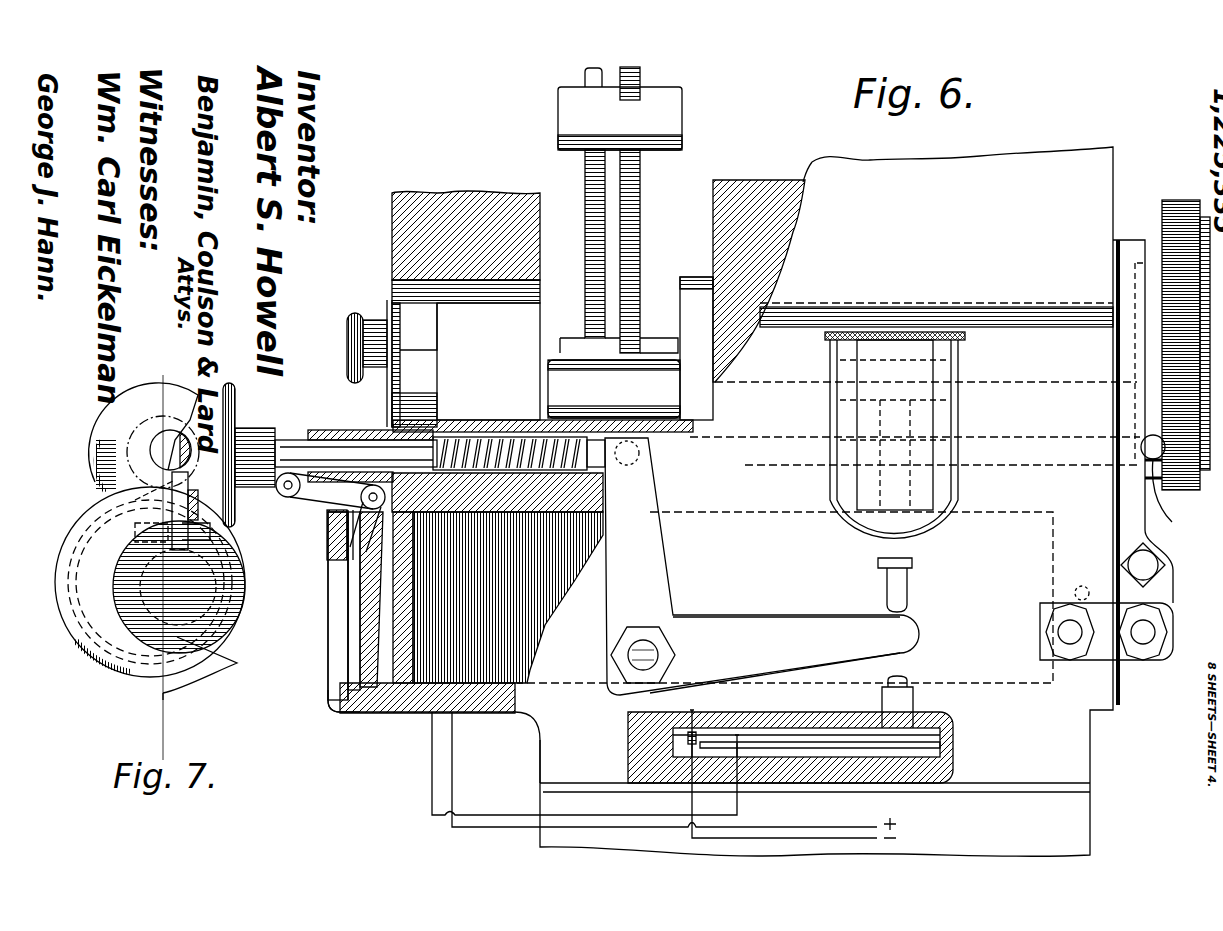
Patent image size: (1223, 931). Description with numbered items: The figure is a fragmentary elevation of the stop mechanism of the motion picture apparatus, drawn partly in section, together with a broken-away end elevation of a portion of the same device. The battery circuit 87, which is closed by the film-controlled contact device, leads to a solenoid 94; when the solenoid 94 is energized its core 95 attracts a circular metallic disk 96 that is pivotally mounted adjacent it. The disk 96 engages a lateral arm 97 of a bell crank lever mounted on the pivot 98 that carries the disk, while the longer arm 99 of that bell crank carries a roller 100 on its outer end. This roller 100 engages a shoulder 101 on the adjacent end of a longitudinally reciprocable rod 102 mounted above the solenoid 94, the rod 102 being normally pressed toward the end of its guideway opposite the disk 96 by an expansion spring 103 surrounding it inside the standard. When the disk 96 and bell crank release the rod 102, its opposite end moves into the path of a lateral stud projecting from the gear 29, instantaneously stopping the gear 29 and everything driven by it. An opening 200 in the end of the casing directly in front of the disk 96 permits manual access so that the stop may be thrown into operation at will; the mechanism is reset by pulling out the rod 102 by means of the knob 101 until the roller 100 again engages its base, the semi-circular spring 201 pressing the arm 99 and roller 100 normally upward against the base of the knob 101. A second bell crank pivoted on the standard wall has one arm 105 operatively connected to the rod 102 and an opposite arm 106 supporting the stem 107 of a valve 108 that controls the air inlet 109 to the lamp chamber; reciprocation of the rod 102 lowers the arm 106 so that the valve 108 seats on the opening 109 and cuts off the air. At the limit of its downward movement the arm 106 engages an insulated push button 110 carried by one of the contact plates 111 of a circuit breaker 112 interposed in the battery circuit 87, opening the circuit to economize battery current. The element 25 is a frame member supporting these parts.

In FIG. 6, the frame member 25 is at (740, 313).
In FIG. 6, the gear 29 is at (1222, 492).
In FIG. 6, the battery circuit 87 is at (477, 817).
In FIG. 6, the solenoid 94 is at (407, 705).
In FIG. 6, the core 95 is at (350, 687).
In FIG. 6, the circular metallic disk 96 is at (366, 636).
In FIG. 7, the circular metallic disk 96 is at (179, 587).
In FIG. 6, the lateral arm 97 is at (330, 565).
In FIG. 6, the pivot 98 is at (330, 548).
In FIG. 6, the longer arm 99 is at (328, 532).
In FIG. 7, the longer arm 99 is at (113, 493).
In FIG. 6, the roller 100 is at (283, 493).
In FIG. 7, the roller 100 is at (155, 480).
In FIG. 6, the shoulder (knob) 101 is at (275, 425).
In FIG. 7, the shoulder (knob) 101 is at (140, 428).
In FIG. 6, the longitudinally reciprocable rod 102 is at (323, 453).
In FIG. 7, the longitudinally reciprocable rod 102 is at (130, 443).
In FIG. 6, the expansion spring 103 is at (530, 440).
In FIG. 6, the arm 105 is at (655, 553).
In FIG. 6, the arm 106 is at (783, 618).
In FIG. 6, the stem 107 is at (905, 590).
In FIG. 6, the valve 108 is at (950, 408).
In FIG. 6, the air inlet 109 is at (967, 460).
In FIG. 6, the insulated push button 110 is at (905, 685).
In FIG. 6, the contact plate 111 is at (955, 745).
In FIG. 6, the circuit breaker 112 is at (815, 780).
In FIG. 6, the opening 200 is at (332, 625).
In FIG. 7, the opening 200 is at (140, 617).
In FIG. 6, the semi-circular spring 201 is at (347, 717).
In FIG. 7, the semi-circular spring 201 is at (147, 687).